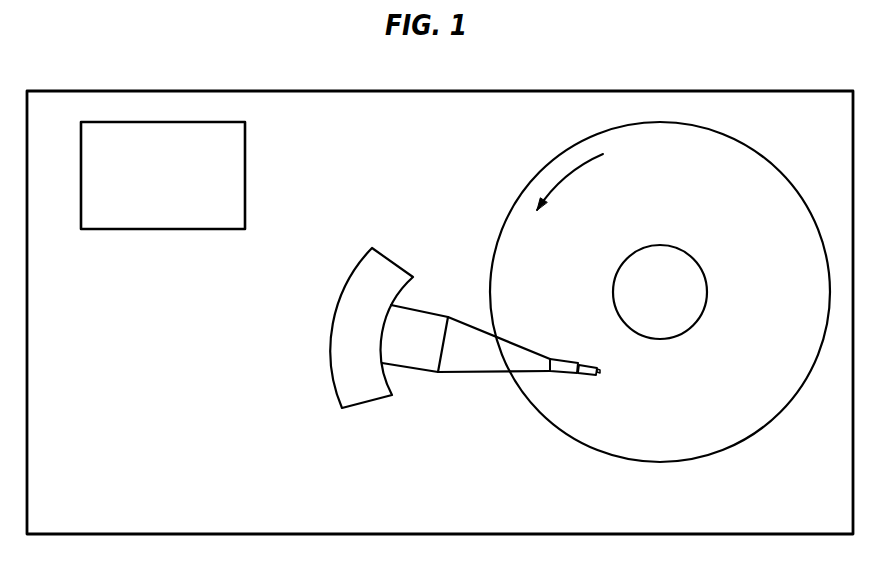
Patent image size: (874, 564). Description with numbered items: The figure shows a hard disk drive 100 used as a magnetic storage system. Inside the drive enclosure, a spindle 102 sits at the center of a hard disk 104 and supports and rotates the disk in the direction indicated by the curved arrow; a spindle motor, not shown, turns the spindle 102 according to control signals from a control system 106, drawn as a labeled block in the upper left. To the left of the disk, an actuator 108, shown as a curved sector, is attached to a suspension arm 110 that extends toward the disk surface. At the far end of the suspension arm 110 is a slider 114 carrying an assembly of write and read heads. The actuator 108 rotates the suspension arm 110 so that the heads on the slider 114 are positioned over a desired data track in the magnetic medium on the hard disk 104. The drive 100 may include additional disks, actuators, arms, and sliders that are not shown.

The hard disk drive 100 is at (293, 516).
The spindle 102 is at (705, 292).
The hard disk 104 is at (660, 190).
The control system 106 is at (146, 216).
The actuator 108 is at (387, 257).
The suspension arm 110 is at (448, 374).
The slider 114 is at (600, 372).